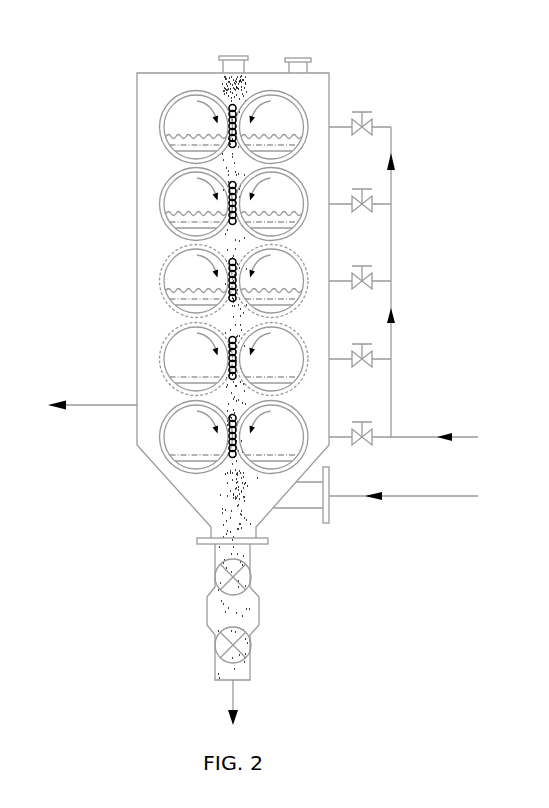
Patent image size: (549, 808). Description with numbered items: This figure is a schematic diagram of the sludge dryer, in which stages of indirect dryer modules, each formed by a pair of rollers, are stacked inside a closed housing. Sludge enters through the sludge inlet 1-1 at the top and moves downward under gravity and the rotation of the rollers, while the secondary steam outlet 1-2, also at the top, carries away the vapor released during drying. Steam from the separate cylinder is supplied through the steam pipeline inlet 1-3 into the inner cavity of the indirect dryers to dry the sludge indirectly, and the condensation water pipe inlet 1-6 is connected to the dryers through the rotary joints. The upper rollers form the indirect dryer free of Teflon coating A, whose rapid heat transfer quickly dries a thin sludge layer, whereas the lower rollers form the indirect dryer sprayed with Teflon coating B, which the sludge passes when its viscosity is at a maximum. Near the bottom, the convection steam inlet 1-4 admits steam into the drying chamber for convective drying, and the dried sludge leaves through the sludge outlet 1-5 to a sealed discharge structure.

The sludge inlet 1-1 is at (214, 54).
The secondary steam outlet 1-2 is at (315, 54).
The steam pipeline inlet 1-3 is at (403, 278).
The convection steam inlet 1-4 is at (376, 499).
The sludge outlet 1-5 is at (213, 625).
The condensation water pipe inlet 1-6 is at (92, 392).
The indirect dryer free of Teflon coating A is at (165, 187).
The indirect dryer sprayed with Teflon coating B is at (167, 337).